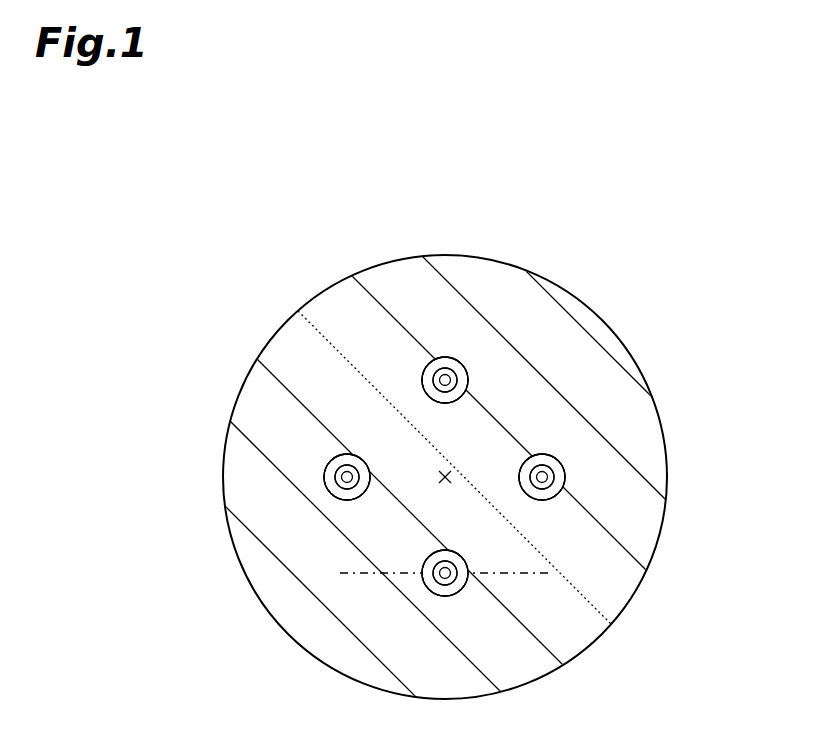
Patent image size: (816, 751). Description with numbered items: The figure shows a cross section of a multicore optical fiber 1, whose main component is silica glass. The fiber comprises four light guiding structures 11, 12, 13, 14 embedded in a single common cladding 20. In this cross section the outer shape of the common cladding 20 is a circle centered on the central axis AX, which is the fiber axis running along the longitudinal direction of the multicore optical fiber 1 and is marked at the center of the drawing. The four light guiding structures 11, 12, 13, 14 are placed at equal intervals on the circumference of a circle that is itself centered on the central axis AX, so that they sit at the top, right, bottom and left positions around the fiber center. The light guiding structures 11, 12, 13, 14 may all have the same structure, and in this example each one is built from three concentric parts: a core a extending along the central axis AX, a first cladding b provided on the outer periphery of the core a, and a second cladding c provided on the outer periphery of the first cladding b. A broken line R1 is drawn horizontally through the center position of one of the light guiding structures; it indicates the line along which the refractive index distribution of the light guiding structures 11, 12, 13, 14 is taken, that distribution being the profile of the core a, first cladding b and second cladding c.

The multicore optical fiber 1 is at (655, 182).
The common cladding 20 is at (667, 476).
The light guiding structure 11 is at (440, 355).
The light guiding structure 12 is at (558, 449).
The light guiding structure 13 is at (453, 600).
The light guiding structure 14 is at (323, 483).
The core a is at (440, 374).
The first cladding b is at (454, 364).
The second cladding c is at (443, 397).
The central axis AX is at (447, 463).
The line R1 is at (465, 574).